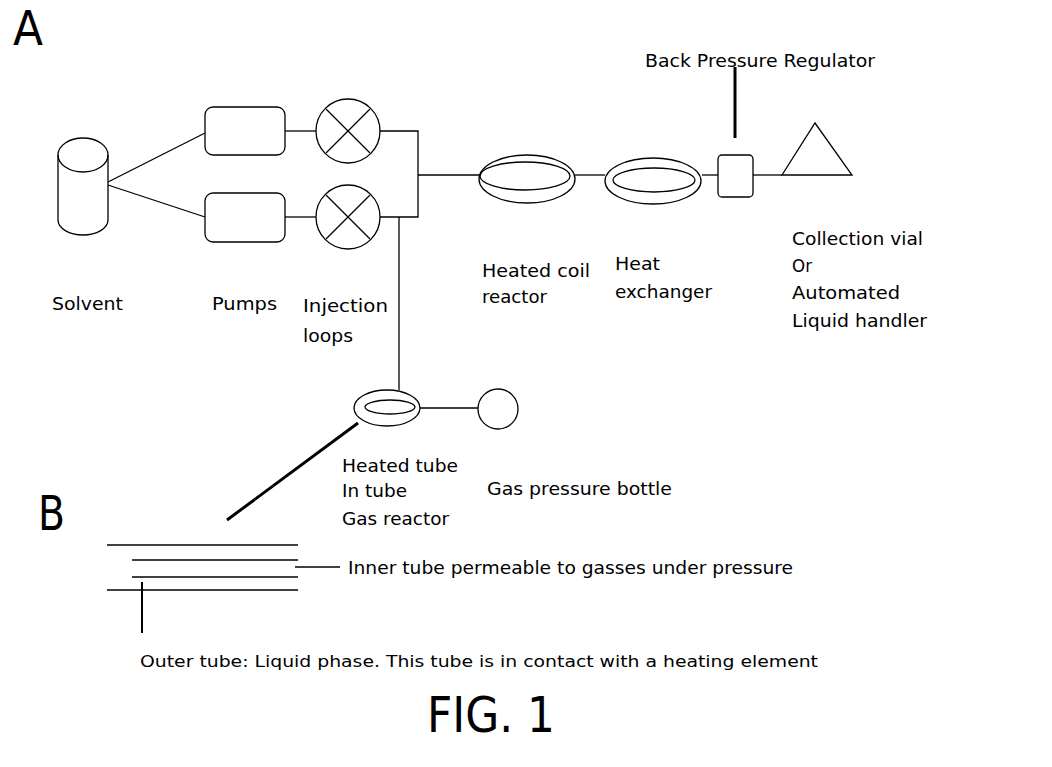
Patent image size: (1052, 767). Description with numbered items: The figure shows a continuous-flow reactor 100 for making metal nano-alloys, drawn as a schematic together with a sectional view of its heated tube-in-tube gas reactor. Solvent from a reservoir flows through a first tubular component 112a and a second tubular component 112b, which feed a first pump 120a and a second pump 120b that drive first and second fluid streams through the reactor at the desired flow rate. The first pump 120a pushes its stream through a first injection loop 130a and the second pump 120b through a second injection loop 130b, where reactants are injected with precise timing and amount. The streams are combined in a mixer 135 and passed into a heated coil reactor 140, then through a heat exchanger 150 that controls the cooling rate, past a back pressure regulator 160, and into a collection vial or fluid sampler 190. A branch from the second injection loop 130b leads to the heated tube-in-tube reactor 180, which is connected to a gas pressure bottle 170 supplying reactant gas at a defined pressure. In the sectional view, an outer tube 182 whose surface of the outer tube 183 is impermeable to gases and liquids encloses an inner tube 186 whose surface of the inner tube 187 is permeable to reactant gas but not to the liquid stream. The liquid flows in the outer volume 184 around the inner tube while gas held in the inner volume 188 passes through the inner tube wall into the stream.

In FIG. 1A, the continuous-flow reactor 100 is at (72, 137).
In FIG. 1A, the first tubular component 112a is at (152, 160).
In FIG. 1A, the second tubular component 112b is at (155, 203).
In FIG. 1A, the first pump 120a is at (235, 107).
In FIG. 1A, the second pump 120b is at (213, 243).
In FIG. 1A, the first injection loop 130a is at (368, 104).
In FIG. 1A, the second injection loop 130b is at (330, 248).
In FIG. 1A, the mixer 135 is at (417, 188).
In FIG. 1A, the heated coil reactor 140 is at (523, 155).
In FIG. 1A, the heat exchanger 150 is at (642, 157).
In FIG. 1A, the back pressure regulator 160 is at (740, 151).
In FIG. 1A, the gas pressure bottle 170 is at (515, 398).
In FIG. 1A, the heated tube-in-tube reactor 180 is at (355, 403).
In FIG. 1A, the collection vial or fluid sampler 190 is at (832, 145).
In FIG. 1B, the outer tube 182 is at (138, 542).
In FIG. 1B, the surface of the outer tube 183 is at (212, 540).
In FIG. 1B, the outer volume 184 is at (168, 552).
In FIG. 1B, the inner tube 186 is at (265, 560).
In FIG. 1B, the surface of the inner tube 187 is at (185, 582).
In FIG. 1B, the inner volume 188 is at (227, 570).